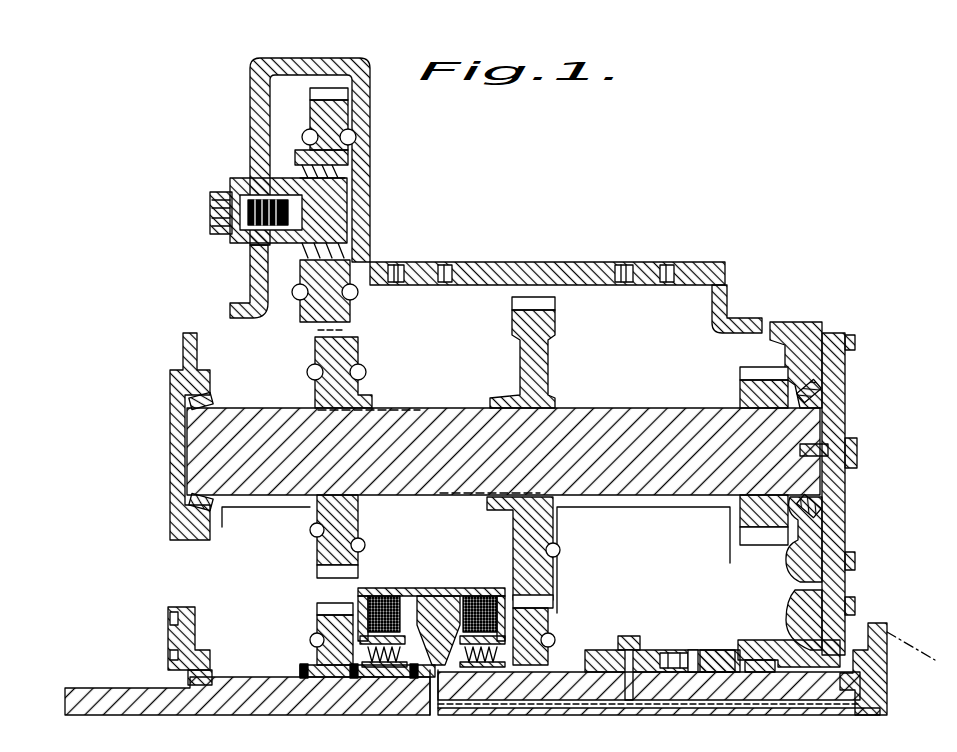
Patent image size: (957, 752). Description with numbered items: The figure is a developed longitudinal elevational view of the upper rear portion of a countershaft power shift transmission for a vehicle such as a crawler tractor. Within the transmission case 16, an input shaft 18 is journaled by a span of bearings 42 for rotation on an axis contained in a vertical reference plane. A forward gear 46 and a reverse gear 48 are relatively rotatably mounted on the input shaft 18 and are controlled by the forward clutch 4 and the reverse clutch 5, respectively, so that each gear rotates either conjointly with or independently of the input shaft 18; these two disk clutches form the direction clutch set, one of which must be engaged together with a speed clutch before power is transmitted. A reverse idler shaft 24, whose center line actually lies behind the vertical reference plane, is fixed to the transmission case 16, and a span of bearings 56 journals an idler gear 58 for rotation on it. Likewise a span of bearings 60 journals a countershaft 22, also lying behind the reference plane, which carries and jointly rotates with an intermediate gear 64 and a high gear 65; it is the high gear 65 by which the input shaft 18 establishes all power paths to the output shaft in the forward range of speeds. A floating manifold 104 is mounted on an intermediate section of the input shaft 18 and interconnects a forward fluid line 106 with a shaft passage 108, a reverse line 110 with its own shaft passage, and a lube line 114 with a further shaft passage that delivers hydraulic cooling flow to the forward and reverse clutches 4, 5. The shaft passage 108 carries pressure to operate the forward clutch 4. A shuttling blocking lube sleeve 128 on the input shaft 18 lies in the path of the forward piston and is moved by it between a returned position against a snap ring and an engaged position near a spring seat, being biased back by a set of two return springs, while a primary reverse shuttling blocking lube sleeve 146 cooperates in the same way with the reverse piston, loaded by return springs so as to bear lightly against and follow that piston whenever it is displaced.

The countershaft 22 is at (810, 433).
The reverse idler shaft 24 is at (352, 230).
The transmission case 16 is at (258, 277).
The span of bearings 56 is at (313, 273).
The idler gear 58 is at (345, 313).
The span of bearings 60 is at (205, 402).
The intermediate gear 64 is at (352, 550).
The high gear 65 is at (533, 550).
The forward clutch 4 is at (482, 587).
The reverse clutch 5 is at (390, 588).
The reverse gear 48 is at (317, 622).
The span of bearings 42 is at (212, 673).
The forward gear 46 is at (550, 624).
The reverse line 110 is at (650, 660).
The forward fluid line 106 is at (630, 637).
The floating manifold 104 is at (660, 660).
The lube line 114 is at (692, 660).
The input shaft 18 is at (697, 667).
The primary reverse shuttling blocking lube sleeve 146 is at (370, 680).
The shuttling blocking lube sleeve 128 is at (455, 677).
The shaft passage 108 is at (510, 680).